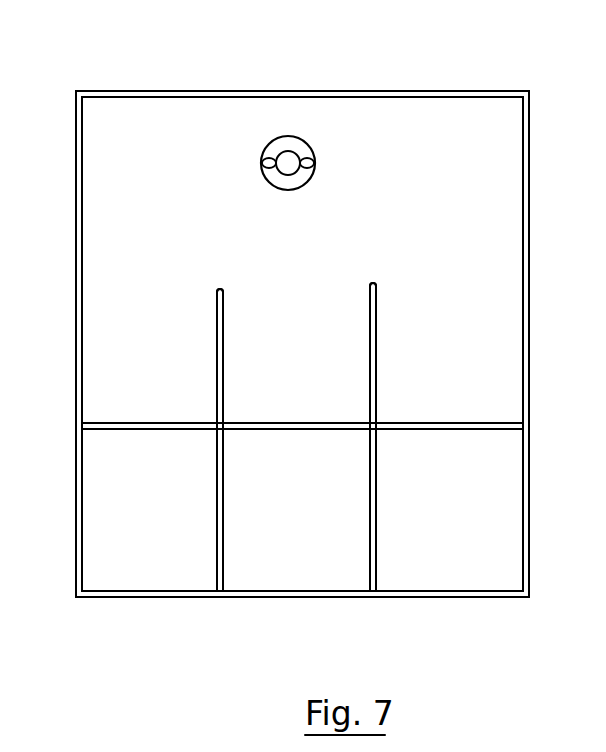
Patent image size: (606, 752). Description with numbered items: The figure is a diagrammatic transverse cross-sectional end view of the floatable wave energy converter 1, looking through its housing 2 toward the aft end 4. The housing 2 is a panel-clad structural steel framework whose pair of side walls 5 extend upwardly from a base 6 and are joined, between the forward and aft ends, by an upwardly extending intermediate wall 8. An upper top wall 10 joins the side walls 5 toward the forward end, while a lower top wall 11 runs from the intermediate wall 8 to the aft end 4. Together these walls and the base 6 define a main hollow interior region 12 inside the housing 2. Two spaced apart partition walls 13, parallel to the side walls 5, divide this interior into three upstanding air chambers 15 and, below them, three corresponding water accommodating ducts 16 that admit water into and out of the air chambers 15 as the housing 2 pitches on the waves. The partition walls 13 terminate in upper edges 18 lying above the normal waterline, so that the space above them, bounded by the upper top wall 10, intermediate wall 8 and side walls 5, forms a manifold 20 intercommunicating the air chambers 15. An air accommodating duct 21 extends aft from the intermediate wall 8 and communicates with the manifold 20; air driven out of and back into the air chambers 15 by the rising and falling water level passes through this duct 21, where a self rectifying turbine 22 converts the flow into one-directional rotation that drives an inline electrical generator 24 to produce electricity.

The wave energy converter 1 is at (455, 54).
The housing 2 is at (528, 365).
The aft end 4 is at (512, 598).
The side walls 5 is at (528, 230).
The base 6 is at (343, 598).
The intermediate wall 8 is at (131, 128).
The upper top wall 10 is at (144, 91).
The lower top wall 11 is at (291, 421).
The main hollow interior region 12 is at (483, 183).
The partition walls 13 is at (224, 383).
The air chambers 15 is at (104, 299).
The water accommodating ducts 16 is at (140, 563).
The upper edges 18 is at (219, 289).
The manifold 20 is at (122, 200).
The air accommodating duct 21 is at (286, 143).
The self rectifying turbine 22 is at (308, 157).
The electrical generator 24 is at (287, 172).